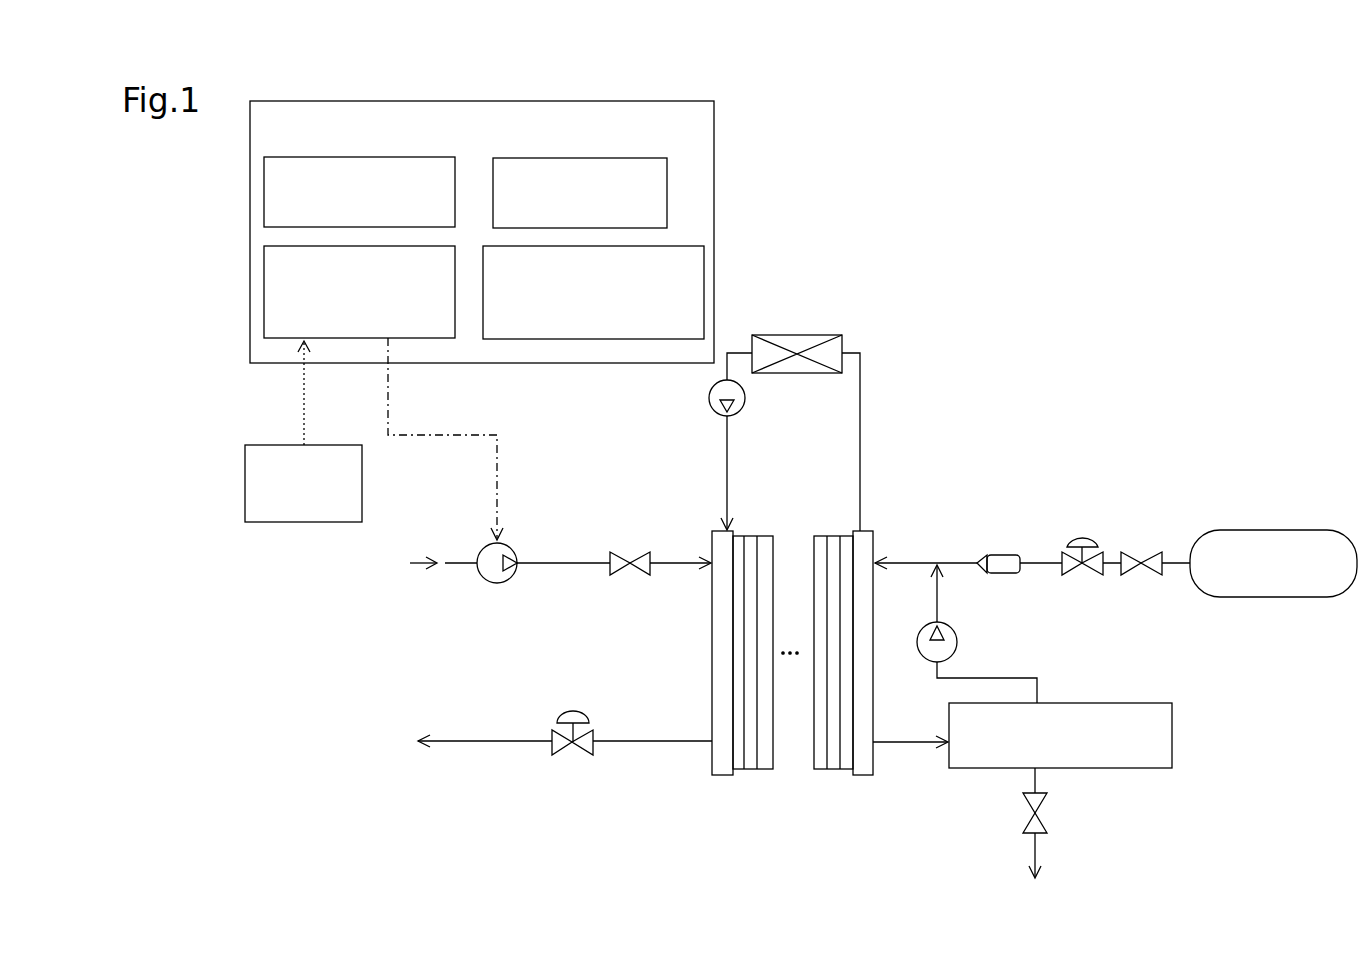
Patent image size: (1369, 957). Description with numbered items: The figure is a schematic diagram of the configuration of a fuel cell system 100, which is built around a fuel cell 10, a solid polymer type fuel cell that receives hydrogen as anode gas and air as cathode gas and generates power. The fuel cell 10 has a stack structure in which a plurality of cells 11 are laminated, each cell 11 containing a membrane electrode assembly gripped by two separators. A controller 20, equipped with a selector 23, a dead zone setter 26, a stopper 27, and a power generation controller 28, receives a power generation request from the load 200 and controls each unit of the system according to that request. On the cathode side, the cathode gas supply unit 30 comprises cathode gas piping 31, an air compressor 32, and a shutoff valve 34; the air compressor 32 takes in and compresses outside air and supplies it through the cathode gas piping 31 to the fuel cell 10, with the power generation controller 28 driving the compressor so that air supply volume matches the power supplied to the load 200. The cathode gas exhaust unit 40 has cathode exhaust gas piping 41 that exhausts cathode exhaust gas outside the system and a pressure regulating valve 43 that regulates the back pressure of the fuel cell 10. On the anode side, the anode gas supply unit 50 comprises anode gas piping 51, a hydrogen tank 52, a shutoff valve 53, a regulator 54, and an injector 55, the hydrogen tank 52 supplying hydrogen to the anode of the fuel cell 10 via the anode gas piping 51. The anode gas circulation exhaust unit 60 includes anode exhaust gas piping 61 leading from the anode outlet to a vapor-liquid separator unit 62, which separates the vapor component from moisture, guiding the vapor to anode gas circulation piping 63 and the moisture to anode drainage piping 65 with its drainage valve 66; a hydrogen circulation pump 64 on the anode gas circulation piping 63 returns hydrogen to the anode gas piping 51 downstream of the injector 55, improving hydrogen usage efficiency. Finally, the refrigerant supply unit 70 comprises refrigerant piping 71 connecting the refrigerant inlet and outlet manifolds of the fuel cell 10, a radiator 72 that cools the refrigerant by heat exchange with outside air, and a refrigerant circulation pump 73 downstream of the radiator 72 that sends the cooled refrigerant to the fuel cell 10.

The fuel cell system 100 is at (1166, 219).
The fuel cell 10 is at (782, 677).
The cell 11 is at (754, 758).
The controller 20 is at (491, 232).
The selector 23 is at (667, 195).
The dead zone setter 26 is at (704, 308).
The stopper 27 is at (264, 193).
The power generation controller 28 is at (264, 303).
The load 200 is at (280, 445).
The cathode gas supply unit 30 is at (484, 536).
The cathode gas piping 31 is at (575, 562).
The air compressor 32 is at (510, 548).
The shutoff valve 34 is at (620, 551).
The cathode gas exhaust unit 40 is at (565, 747).
The cathode exhaust gas piping 41 is at (470, 740).
The pressure regulating valve 43 is at (565, 710).
The anode gas supply unit 50 is at (1116, 527).
The anode gas piping 51 is at (960, 562).
The hydrogen tank 52 is at (1250, 530).
The shutoff valve 53 is at (1128, 552).
The regulator 54 is at (1082, 534).
The injector 55 is at (1005, 576).
The anode gas circulation exhaust unit 60 is at (1064, 721).
The anode exhaust gas piping 61 is at (904, 745).
The vapor-liquid separator unit 62 is at (1138, 703).
The anode gas circulation piping 63 is at (968, 678).
The hydrogen circulation pump 64 is at (952, 628).
The anode drainage piping 65 is at (1037, 848).
The drainage valve 66 is at (1039, 816).
The refrigerant supply unit 70 is at (802, 408).
The refrigerant piping 71 is at (862, 382).
The radiator 72 is at (777, 335).
The refrigerant circulation pump 73 is at (709, 395).